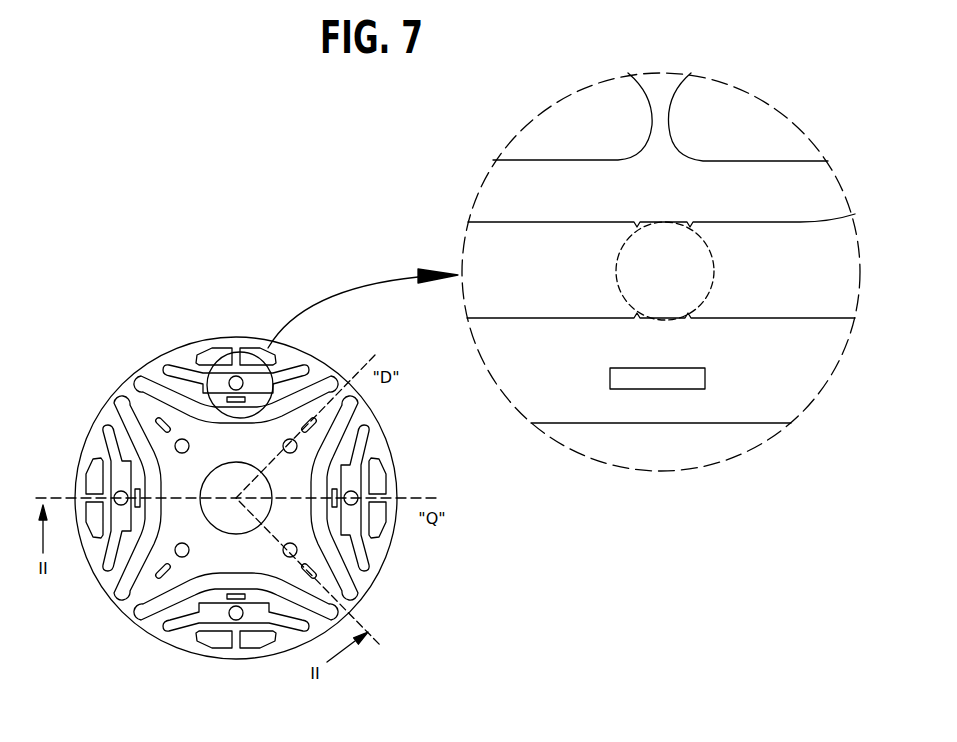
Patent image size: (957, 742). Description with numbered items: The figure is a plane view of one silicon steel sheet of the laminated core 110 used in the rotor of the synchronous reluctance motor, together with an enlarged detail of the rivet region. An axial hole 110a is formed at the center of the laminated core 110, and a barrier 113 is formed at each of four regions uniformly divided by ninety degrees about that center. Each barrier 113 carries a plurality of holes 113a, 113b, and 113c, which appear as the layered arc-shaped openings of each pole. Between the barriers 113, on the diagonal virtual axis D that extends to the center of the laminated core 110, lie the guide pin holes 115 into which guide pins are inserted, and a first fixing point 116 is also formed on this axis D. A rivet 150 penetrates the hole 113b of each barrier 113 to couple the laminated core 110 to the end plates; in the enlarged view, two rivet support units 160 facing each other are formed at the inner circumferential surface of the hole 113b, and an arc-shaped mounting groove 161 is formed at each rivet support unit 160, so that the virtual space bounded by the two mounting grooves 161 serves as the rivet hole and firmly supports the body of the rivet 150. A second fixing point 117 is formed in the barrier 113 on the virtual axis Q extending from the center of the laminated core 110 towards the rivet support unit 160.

The laminated core 110 is at (412, 474).
The axial hole 110a is at (266, 504).
The barrier 113 is at (80, 644).
The hole 113a is at (142, 624).
The hole 113b is at (192, 634).
The hole 113c is at (222, 652).
The guide pin hole 115 is at (175, 446).
The first fixing point 116 is at (303, 577).
The second fixing point 117 is at (134, 506).
The rivet 150 is at (238, 376).
The rivet support unit 160 is at (686, 319).
The mounting groove 161 is at (665, 318).